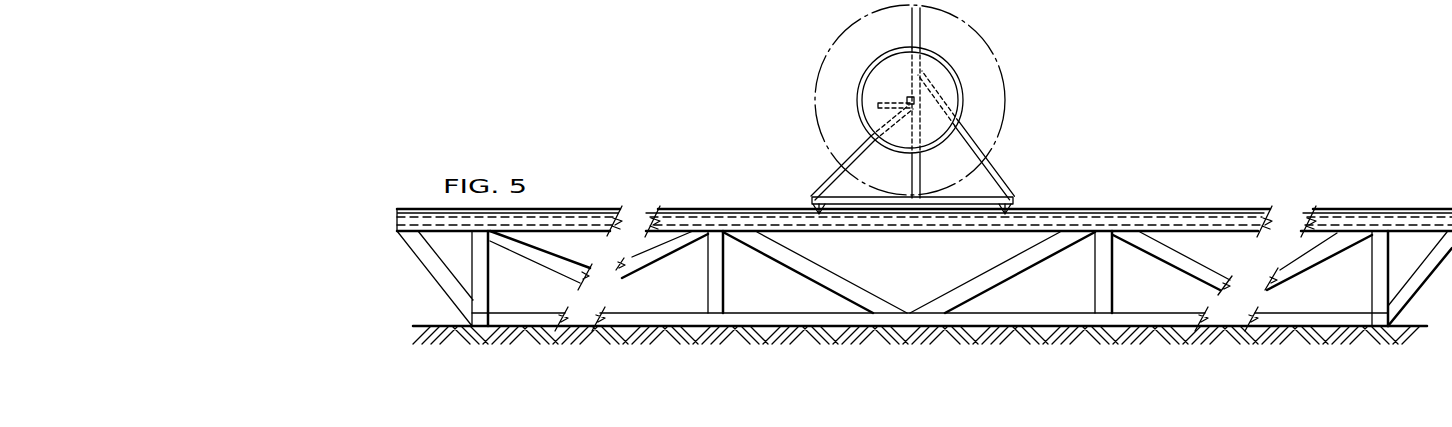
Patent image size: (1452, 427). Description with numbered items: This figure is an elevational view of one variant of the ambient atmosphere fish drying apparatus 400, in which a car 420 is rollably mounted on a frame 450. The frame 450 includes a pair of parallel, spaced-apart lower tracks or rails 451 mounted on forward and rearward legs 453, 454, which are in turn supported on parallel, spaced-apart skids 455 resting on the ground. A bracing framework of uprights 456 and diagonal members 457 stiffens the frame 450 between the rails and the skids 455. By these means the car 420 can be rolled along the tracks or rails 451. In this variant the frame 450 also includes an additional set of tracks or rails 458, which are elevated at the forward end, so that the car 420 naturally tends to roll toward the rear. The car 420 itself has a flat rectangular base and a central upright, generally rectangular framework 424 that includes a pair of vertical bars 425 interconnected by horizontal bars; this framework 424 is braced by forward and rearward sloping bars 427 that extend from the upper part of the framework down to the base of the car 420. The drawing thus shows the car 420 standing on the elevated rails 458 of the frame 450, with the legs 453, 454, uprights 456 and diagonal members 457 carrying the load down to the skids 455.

The ambient atmosphere fish drying apparatus 400 is at (905, 109).
The car 420 is at (1002, 180).
The central upright framework 424 is at (921, 72).
The vertical bars 425 is at (921, 32).
The forward and rearward sloping bars 427 is at (833, 178).
The frame 450 is at (917, 240).
The lower track or rail 451 is at (1187, 228).
The forward leg 453 is at (1372, 283).
The rearward leg 454 is at (478, 250).
The skids 455 is at (1057, 323).
The uprights 456 is at (722, 288).
The diagonal members 457 is at (551, 260).
The additional tracks or rails 458 is at (1375, 210).